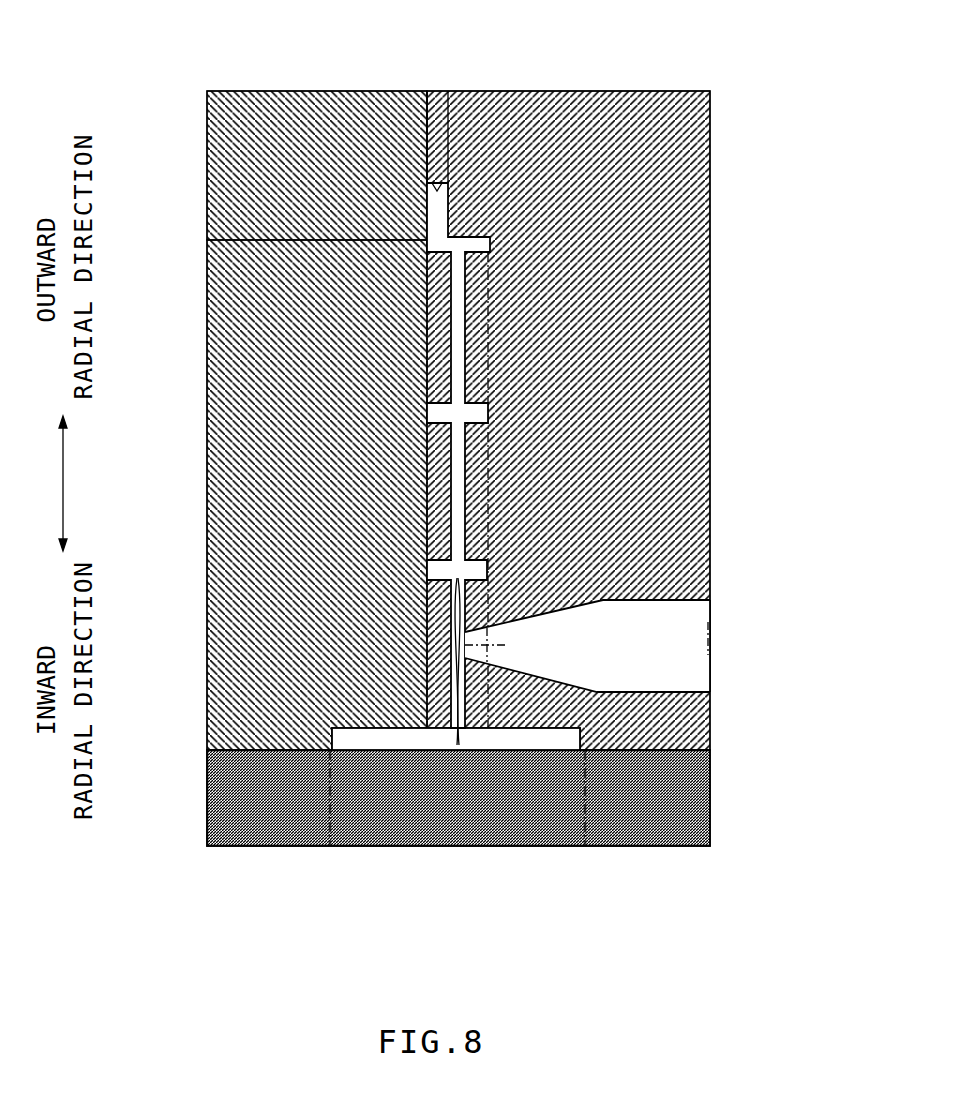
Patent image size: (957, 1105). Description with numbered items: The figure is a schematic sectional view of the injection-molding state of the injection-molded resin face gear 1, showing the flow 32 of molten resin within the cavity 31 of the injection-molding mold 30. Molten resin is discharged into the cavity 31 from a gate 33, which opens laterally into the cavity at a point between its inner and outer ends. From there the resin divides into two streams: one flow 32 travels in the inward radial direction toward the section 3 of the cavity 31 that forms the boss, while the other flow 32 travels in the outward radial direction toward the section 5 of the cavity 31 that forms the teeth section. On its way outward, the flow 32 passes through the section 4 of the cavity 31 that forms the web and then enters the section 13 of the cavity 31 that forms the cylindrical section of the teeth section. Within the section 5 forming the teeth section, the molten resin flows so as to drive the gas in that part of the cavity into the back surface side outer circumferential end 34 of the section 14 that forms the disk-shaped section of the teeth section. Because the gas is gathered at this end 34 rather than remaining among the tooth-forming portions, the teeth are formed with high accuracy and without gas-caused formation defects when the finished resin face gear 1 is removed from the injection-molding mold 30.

The injection-molding mold 30 is at (591, 68).
The section forming the disk-shaped section of the teeth section 14 is at (427, 210).
The section forming the web 4 is at (450, 286).
The section forming the cylindrical section of the teeth section 13 is at (490, 250).
The section forming the boss 3 is at (505, 752).
The cavity 31 is at (406, 745).
The injection-molded resin face gear 1 is at (470, 372).
The gate 33 is at (696, 631).
The section forming the teeth section 5 is at (441, 176).
The back surface side outer circumferential end 34 is at (423, 178).
The flow of molten resin 32 is at (452, 579).